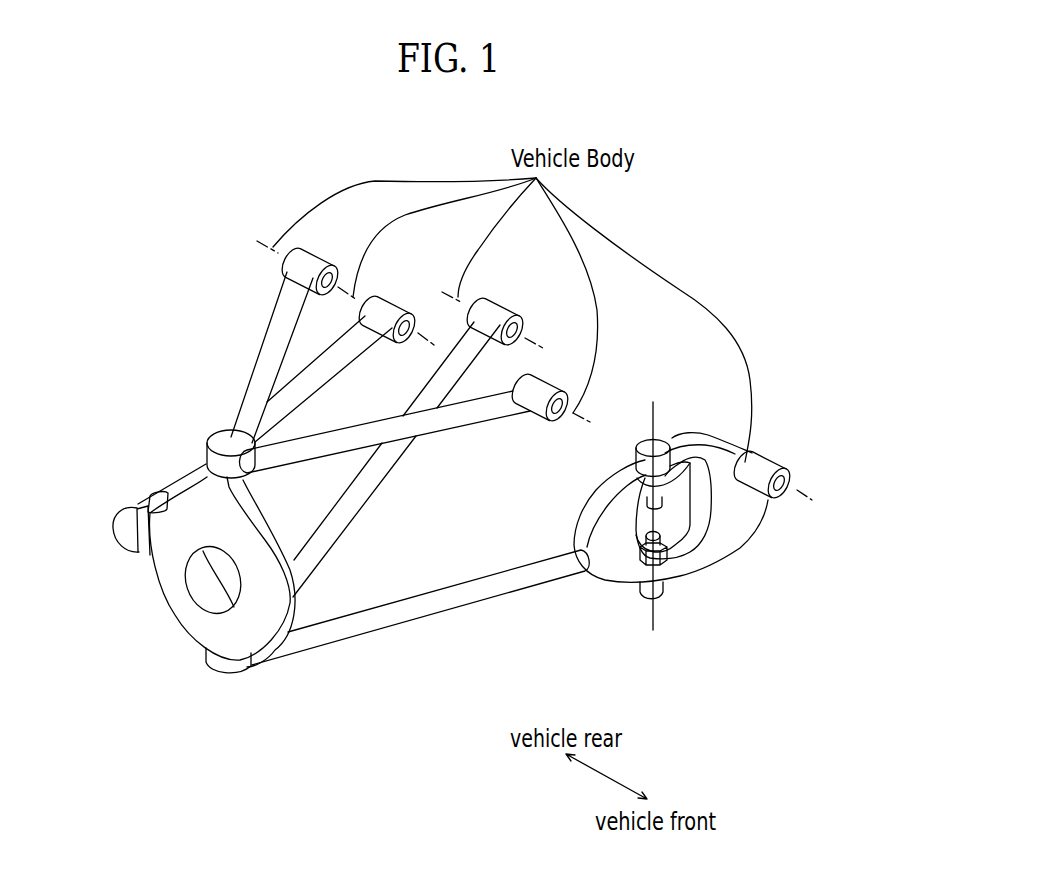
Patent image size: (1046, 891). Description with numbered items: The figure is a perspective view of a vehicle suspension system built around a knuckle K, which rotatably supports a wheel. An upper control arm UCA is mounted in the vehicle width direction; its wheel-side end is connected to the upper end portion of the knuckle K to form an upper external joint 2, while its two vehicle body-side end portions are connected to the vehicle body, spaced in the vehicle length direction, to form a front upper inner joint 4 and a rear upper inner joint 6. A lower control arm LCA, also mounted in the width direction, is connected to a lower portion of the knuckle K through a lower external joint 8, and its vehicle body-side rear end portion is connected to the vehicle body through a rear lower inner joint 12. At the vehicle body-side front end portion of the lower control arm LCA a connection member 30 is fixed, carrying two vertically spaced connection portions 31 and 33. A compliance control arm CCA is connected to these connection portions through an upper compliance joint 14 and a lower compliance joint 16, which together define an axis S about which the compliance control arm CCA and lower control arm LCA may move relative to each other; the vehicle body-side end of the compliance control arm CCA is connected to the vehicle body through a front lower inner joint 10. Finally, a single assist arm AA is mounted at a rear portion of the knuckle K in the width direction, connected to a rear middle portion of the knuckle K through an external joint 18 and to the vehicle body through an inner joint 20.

The upper external joint 2 is at (220, 428).
The front upper inner joint 4 is at (546, 382).
The rear upper inner joint 6 is at (318, 257).
The lower external joint 8 is at (226, 668).
The front lower inner joint 10 is at (762, 457).
The rear lower inner joint 12 is at (500, 306).
The upper compliance joint 14 is at (638, 446).
The lower compliance joint 16 is at (647, 592).
The external joint 18 is at (133, 504).
The inner joint 20 is at (391, 303).
The connection member 30 is at (612, 566).
The connection portion 31 is at (673, 440).
The connection portion 33 is at (667, 563).
The upper control arm UCA is at (362, 432).
The lower control arm LCA is at (369, 494).
The assist arm AA is at (188, 467).
The compliance control arm CCA is at (728, 542).
The knuckle K is at (170, 592).
The axis S is at (659, 413).